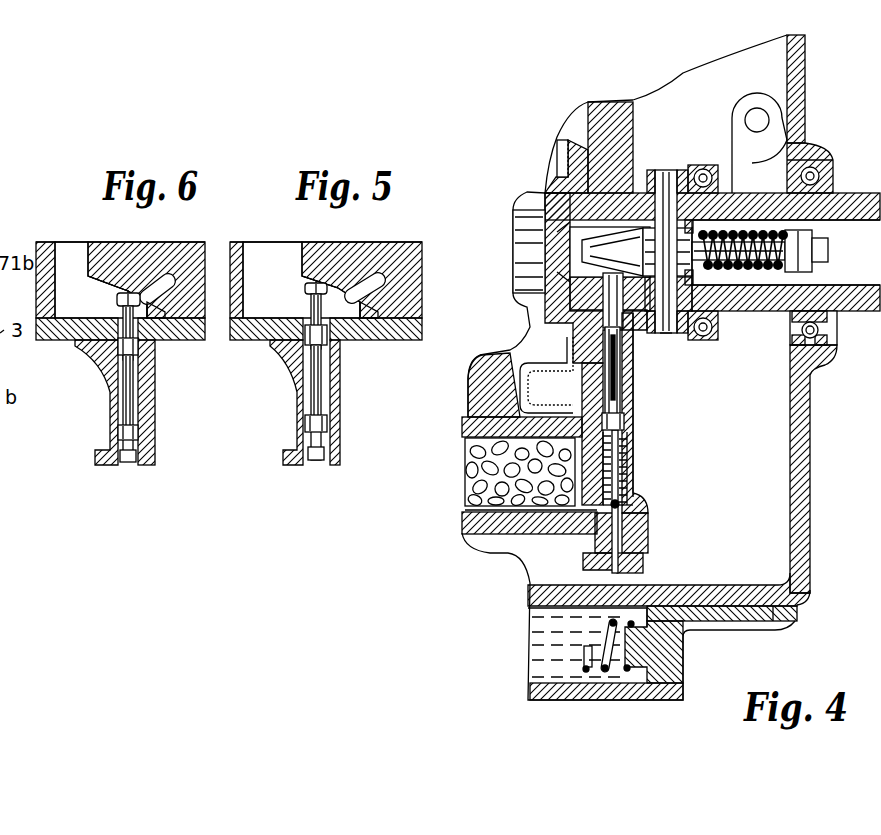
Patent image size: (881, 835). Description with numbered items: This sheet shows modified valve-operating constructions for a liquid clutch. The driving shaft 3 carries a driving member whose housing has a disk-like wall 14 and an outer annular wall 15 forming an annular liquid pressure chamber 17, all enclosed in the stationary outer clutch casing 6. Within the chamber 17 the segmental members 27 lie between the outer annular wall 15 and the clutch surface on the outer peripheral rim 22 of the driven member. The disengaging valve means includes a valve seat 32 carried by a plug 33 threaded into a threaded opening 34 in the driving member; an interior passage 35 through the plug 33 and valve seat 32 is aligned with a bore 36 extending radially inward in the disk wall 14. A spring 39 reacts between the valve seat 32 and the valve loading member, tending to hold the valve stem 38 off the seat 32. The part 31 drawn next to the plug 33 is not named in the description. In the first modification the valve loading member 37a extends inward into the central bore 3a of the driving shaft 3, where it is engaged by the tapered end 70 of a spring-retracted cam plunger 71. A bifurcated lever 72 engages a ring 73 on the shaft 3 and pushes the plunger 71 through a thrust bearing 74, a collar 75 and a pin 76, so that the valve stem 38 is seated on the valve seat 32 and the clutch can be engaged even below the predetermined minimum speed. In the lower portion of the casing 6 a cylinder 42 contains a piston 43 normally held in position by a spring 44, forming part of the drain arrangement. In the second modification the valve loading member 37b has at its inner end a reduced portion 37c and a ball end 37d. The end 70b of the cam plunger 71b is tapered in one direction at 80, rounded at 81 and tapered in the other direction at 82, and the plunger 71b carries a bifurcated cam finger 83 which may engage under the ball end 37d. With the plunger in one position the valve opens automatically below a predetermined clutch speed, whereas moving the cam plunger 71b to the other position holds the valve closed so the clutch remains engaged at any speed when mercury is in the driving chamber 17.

In FIG. 6, the driving shaft 3 is at (192, 332).
In FIG. 5, the driving shaft 3 is at (398, 331).
In FIG. 4, the driving shaft 3 is at (847, 200).
In FIG. 4, the central bore 3a is at (548, 193).
In FIG. 4, the outer clutch casing 6 is at (808, 455).
In FIG. 6, the disk-like wall 14 is at (149, 413).
In FIG. 5, the disk-like wall 14 is at (333, 407).
In FIG. 4, the disk-like wall 14 is at (630, 421).
In FIG. 4, the outer annular wall 15 is at (537, 533).
In FIG. 4, the liquid pressure chamber 17 is at (460, 537).
In FIG. 4, the outer peripheral rim 22 is at (468, 428).
In FIG. 4, the segmental members 27 is at (508, 495).
In FIG. 4, the bushing 31 is at (646, 533).
In FIG. 4, the valve seat 32 is at (625, 515).
In FIG. 4, the plug 33 is at (647, 561).
In FIG. 4, the threaded opening 34 is at (592, 536).
In FIG. 4, the interior passage 35 is at (585, 567).
In FIG. 4, the bore 36 is at (628, 490).
In FIG. 4, the valve loading member 37a is at (615, 375).
In FIG. 6, the valve loading member 37b is at (130, 405).
In FIG. 5, the valve loading member 37b is at (317, 378).
In FIG. 6, the reduced portion 37c is at (123, 323).
In FIG. 5, the reduced portion 37c is at (305, 308).
In FIG. 6, the ball end 37d is at (116, 299).
In FIG. 5, the ball end 37d is at (304, 290).
In FIG. 4, the valve stem 38 is at (615, 467).
In FIG. 4, the spring 39 is at (628, 448).
In FIG. 4, the cylinder 42 is at (553, 677).
In FIG. 4, the piston 43 is at (657, 677).
In FIG. 4, the spring 44 is at (605, 672).
In FIG. 4, the tapered end 70 is at (608, 273).
In FIG. 6, the end of cam plunger 70b is at (96, 254).
In FIG. 5, the end of cam plunger 70b is at (308, 252).
In FIG. 4, the cam plunger 71 is at (735, 252).
In FIG. 6, the cam plunger 71b is at (187, 250).
In FIG. 5, the cam plunger 71b is at (408, 259).
In FIG. 4, the bifurcated lever 72 is at (797, 147).
In FIG. 4, the ring 73 is at (718, 192).
In FIG. 4, the thrust bearing 74 is at (699, 165).
In FIG. 4, the collar 75 is at (660, 170).
In FIG. 4, the pin 76 is at (668, 333).
In FIG. 6, the taper 80 is at (124, 292).
In FIG. 5, the taper 80 is at (320, 283).
In FIG. 6, the rounded portion 81 is at (130, 292).
In FIG. 5, the rounded portion 81 is at (343, 283).
In FIG. 6, the taper 82 is at (156, 275).
In FIG. 5, the taper 82 is at (368, 273).
In FIG. 6, the bifurcated cam finger 83 is at (150, 312).
In FIG. 5, the bifurcated cam finger 83 is at (360, 312).